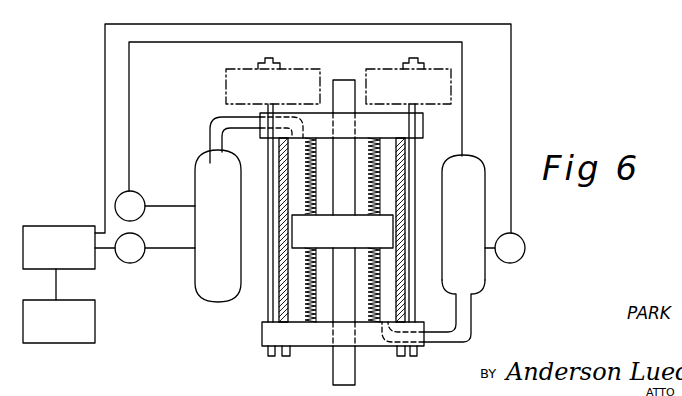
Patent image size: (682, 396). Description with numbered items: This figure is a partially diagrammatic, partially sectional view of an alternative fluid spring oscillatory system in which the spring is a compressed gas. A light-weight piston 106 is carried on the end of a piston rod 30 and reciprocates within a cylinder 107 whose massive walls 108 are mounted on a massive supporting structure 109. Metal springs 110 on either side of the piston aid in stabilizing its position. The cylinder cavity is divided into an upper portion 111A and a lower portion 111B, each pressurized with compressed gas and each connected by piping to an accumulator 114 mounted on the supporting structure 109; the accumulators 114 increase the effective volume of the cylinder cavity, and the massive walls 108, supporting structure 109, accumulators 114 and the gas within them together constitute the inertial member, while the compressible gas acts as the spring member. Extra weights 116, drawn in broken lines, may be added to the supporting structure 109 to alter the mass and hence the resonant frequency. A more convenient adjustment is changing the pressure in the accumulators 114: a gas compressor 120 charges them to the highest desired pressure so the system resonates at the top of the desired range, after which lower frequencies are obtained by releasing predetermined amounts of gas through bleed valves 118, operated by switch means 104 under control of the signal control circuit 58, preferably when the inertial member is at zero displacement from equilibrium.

The shaft 30 is at (358, 373).
The signal control circuit 58 is at (96, 329).
The switch means 104 is at (60, 226).
The piston 106 is at (393, 228).
The cylinder 107 is at (262, 312).
The massive walls 108 is at (402, 150).
The supporting structure 109 is at (418, 351).
The metal springs 110 is at (413, 138).
The upper portion of the cylinder cavity 111A is at (290, 163).
The lower portion of the cylinder cavity 111B is at (290, 276).
The accumulator 114 is at (205, 300).
The extra weights 116 is at (225, 78).
The bleed valves 118 is at (132, 263).
The gas compressor 120 is at (141, 193).